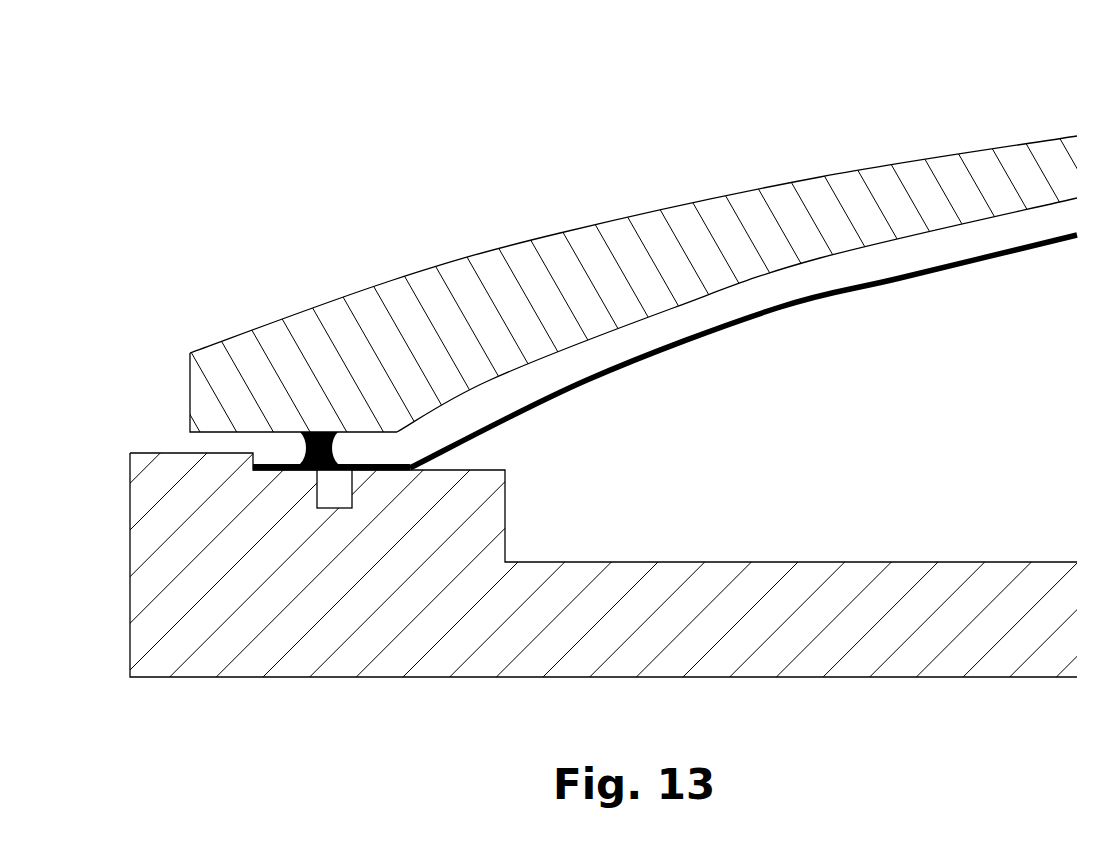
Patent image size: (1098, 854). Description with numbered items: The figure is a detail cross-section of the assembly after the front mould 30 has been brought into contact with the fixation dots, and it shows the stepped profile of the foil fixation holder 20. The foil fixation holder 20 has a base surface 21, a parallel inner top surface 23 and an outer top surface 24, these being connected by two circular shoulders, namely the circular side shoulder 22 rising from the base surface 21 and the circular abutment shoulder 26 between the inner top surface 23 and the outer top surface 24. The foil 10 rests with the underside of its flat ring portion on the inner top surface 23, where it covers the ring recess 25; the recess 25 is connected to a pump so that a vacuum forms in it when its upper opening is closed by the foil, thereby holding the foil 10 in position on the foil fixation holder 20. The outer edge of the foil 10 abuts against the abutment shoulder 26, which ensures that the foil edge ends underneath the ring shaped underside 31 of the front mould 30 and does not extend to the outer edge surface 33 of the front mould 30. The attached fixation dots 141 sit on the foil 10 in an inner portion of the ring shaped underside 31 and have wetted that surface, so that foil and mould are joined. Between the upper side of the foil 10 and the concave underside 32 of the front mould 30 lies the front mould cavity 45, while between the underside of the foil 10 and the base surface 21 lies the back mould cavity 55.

The foil 10 is at (850, 292).
The foil fixation holder 20 is at (536, 646).
The base surface 21 is at (631, 560).
The circular side shoulder 22 is at (508, 512).
The inner top surface 23 is at (490, 468).
The outer top surface 24 is at (159, 450).
The ring recess 25 is at (330, 488).
The circular abutment shoulder 26 is at (255, 460).
The front mould 30 is at (670, 245).
The ring shaped underside 31 is at (202, 432).
The concave underside 32 is at (790, 293).
The outer edge surface 33 is at (190, 383).
The front mould cavity 45 is at (900, 257).
The back mould cavity 55 is at (969, 444).
The attached fixation dots 141 is at (335, 450).